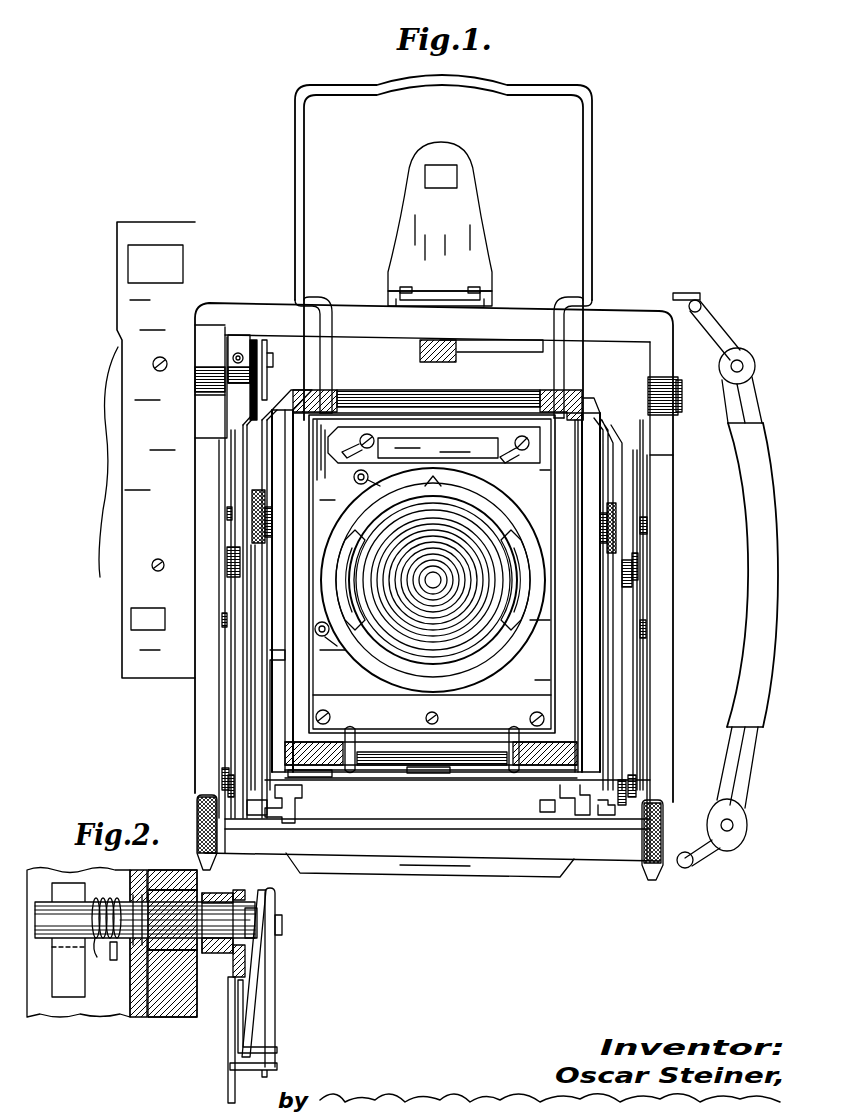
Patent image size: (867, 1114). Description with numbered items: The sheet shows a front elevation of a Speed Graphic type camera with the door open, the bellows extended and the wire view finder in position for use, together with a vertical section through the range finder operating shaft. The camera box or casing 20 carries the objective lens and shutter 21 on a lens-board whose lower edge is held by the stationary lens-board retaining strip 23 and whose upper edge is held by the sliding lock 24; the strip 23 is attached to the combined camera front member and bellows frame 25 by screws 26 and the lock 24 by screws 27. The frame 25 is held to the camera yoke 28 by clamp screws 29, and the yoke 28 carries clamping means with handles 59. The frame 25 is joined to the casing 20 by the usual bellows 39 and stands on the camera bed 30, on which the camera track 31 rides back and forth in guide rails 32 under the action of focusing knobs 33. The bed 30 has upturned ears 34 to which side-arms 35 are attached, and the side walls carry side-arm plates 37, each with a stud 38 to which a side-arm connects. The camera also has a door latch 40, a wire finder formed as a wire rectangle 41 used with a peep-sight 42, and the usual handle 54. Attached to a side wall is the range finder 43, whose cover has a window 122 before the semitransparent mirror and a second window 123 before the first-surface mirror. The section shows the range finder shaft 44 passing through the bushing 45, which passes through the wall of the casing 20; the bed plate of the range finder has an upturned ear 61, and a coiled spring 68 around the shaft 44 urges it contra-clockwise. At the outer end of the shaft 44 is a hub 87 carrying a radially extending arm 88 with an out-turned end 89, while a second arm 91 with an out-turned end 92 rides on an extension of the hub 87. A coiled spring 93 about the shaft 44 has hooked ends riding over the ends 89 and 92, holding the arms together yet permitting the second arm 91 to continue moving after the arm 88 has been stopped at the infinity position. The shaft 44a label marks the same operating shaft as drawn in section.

In FIG. 1, the camera box or casing 20 is at (663, 607).
In FIG. 2, the camera box or casing 20 is at (168, 1002).
In FIG. 1, the objective lens and shutter 21 is at (482, 648).
In FIG. 1, the lower stationary lens-board retaining strip 23 is at (358, 715).
In FIG. 1, the sliding lock 24 is at (430, 437).
In FIG. 1, the combined camera front member and bellows frame 25 is at (572, 425).
In FIG. 1, the screws 26 is at (323, 710).
In FIG. 1, the screws 27 is at (365, 434).
In FIG. 1, the camera yoke 28 is at (597, 758).
In FIG. 1, the clamp screws 29 is at (254, 498).
In FIG. 1, the camera bed 30 is at (430, 855).
In FIG. 1, the camera track 31 is at (577, 825).
In FIG. 1, the guide rails 32 is at (260, 815).
In FIG. 1, the focusing knobs 33 is at (195, 808).
In FIG. 1, the upturned ears 34 is at (221, 778).
In FIG. 1, the side-arms 35 is at (228, 695).
In FIG. 1, the side-arm plates 37 is at (647, 535).
In FIG. 1, the stud 38 is at (638, 571).
In FIG. 1, the bellows 39 is at (606, 437).
In FIG. 1, the door latch 40 is at (458, 360).
In FIG. 1, the wire rectangle 41 is at (592, 205).
In FIG. 1, the peep-sight 42 is at (463, 212).
In FIG. 1, the range finder 43 is at (108, 470).
In FIG. 1, the shaft 44 is at (273, 364).
In FIG. 2, the shaft 44 is at (283, 933).
In FIG. 2, the shaft 44a is at (127, 876).
In FIG. 2, the bushing 45 is at (165, 892).
In FIG. 1, the handle 54 is at (760, 630).
In FIG. 1, the handles 59 is at (354, 731).
In FIG. 2, the upturned ear 61 is at (68, 992).
In FIG. 2, the coiled spring 68 is at (98, 957).
In FIG. 1, the hub 87 is at (238, 352).
In FIG. 2, the hub 87 is at (222, 950).
In FIG. 2, the radially extending arm 88 is at (252, 1011).
In FIG. 2, the out-turned end 89 is at (279, 1048).
In FIG. 1, the second arm 91 is at (249, 722).
In FIG. 2, the second arm 91 is at (228, 1076).
In FIG. 2, the out-turned end 92 is at (278, 1067).
In FIG. 2, the coiled spring 93 is at (276, 988).
In FIG. 1, the window 122 is at (152, 252).
In FIG. 1, the second window 123 is at (140, 620).